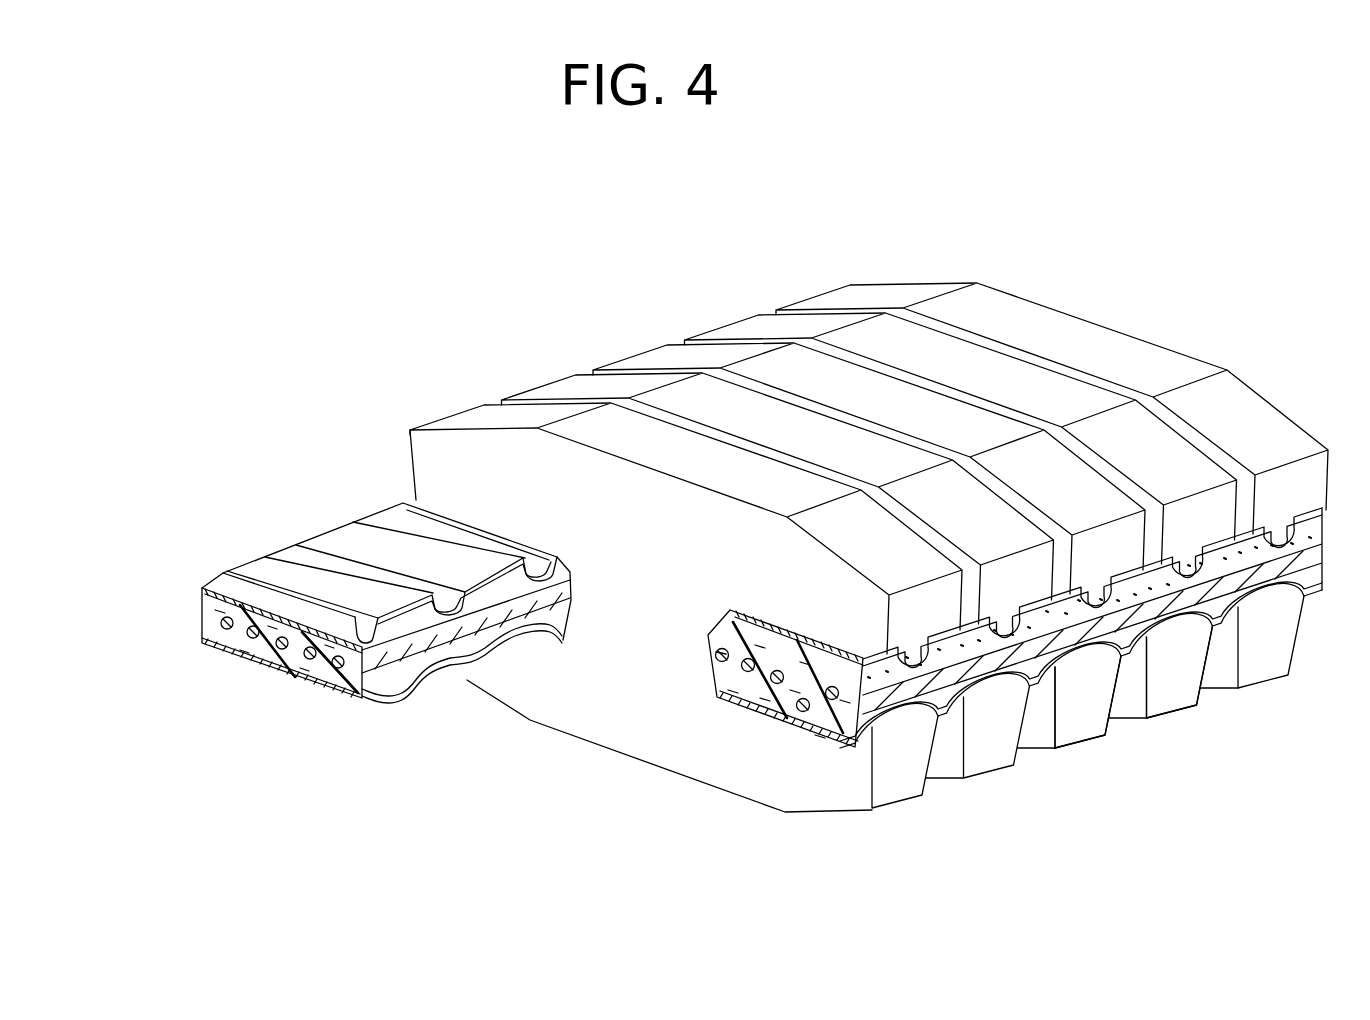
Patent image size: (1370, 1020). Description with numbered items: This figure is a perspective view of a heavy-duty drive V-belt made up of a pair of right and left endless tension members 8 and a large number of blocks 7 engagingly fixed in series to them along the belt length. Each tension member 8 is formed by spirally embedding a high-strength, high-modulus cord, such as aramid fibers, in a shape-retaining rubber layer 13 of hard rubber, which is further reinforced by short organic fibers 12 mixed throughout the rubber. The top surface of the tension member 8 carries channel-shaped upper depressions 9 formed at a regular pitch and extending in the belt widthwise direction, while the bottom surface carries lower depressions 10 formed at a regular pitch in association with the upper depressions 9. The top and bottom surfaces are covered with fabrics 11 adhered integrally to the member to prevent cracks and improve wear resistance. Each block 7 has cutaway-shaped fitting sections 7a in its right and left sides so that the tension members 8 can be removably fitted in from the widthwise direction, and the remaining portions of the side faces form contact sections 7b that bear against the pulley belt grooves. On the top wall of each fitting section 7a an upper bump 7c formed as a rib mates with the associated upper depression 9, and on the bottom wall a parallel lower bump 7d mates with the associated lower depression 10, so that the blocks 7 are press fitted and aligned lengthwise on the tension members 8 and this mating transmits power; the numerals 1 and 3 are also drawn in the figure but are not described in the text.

The belt body 1 is at (481, 679).
The rubber layer 3 is at (826, 730).
The block 7 is at (843, 534).
The fitting section 7a is at (460, 518).
The contact section 7b is at (413, 480).
The upper bump 7c is at (1140, 603).
The lower bump 7d is at (1093, 670).
The tension member 8 is at (776, 737).
The upper depression 9 is at (352, 545).
The lower depression 10 is at (433, 672).
The fabric 11 is at (722, 612).
The short organic fiber 12 is at (812, 664).
The shape-retaining rubber layer 13 is at (238, 662).